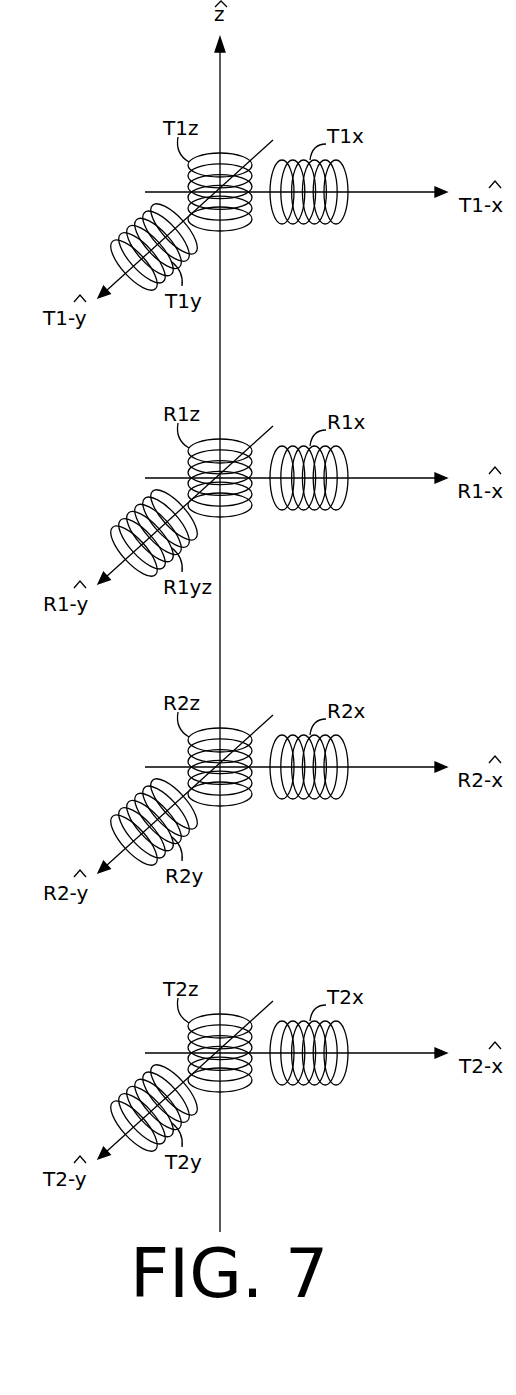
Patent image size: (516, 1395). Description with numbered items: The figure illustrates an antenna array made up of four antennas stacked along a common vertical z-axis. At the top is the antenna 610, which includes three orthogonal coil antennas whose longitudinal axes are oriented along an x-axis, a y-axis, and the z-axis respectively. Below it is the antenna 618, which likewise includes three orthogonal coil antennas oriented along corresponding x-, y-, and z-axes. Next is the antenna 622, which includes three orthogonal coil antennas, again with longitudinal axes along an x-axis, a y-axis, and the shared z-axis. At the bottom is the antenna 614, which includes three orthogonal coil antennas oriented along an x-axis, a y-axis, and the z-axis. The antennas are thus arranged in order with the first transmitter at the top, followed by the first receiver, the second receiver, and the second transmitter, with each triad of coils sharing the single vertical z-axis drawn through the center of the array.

The antenna 610 is at (243, 230).
The antenna 618 is at (243, 516).
The antenna 622 is at (243, 805).
The antenna 614 is at (243, 1091).